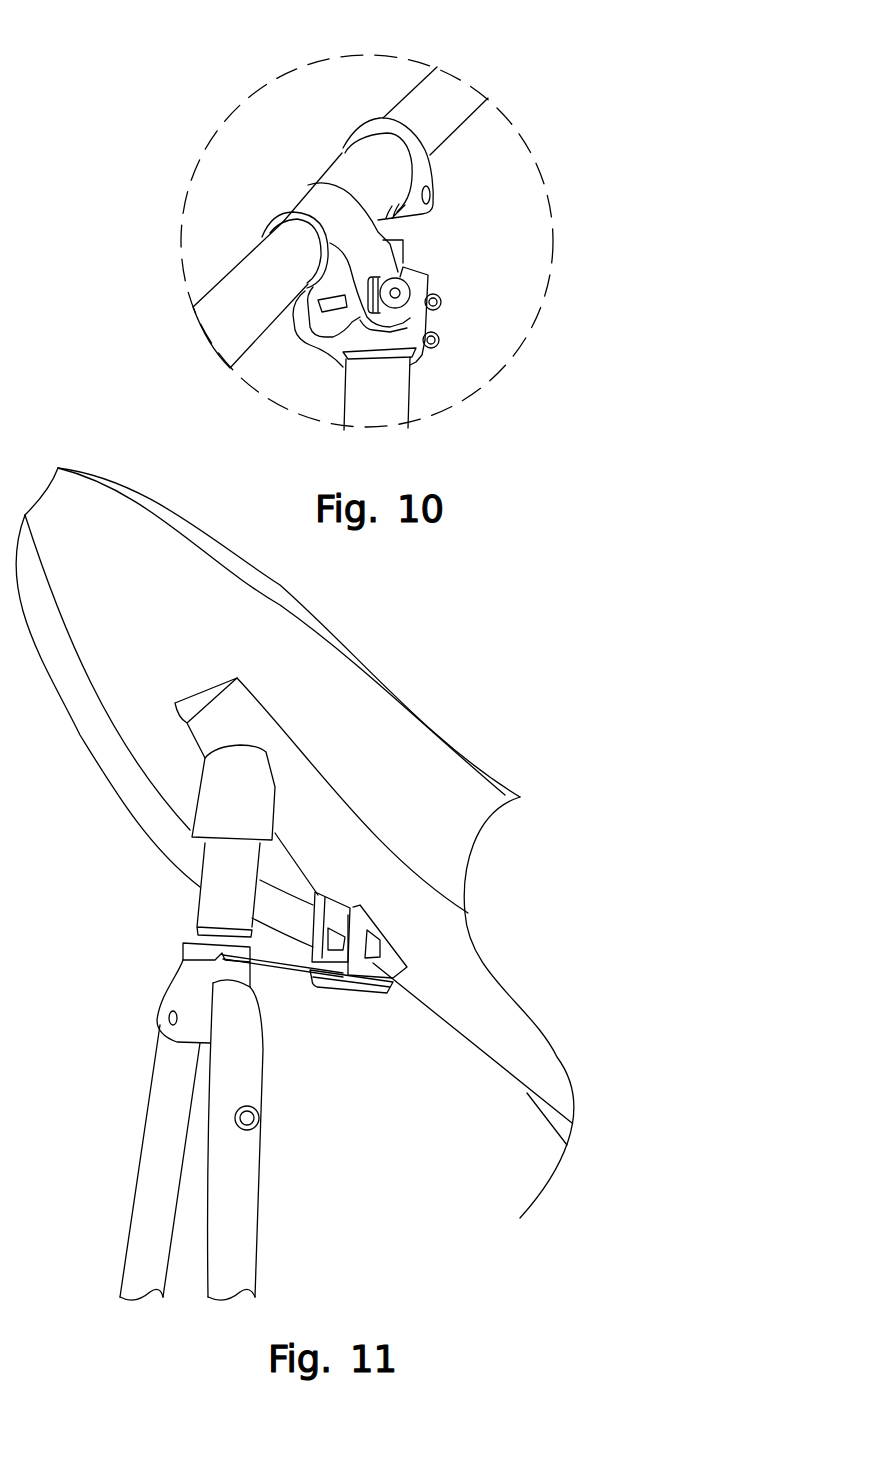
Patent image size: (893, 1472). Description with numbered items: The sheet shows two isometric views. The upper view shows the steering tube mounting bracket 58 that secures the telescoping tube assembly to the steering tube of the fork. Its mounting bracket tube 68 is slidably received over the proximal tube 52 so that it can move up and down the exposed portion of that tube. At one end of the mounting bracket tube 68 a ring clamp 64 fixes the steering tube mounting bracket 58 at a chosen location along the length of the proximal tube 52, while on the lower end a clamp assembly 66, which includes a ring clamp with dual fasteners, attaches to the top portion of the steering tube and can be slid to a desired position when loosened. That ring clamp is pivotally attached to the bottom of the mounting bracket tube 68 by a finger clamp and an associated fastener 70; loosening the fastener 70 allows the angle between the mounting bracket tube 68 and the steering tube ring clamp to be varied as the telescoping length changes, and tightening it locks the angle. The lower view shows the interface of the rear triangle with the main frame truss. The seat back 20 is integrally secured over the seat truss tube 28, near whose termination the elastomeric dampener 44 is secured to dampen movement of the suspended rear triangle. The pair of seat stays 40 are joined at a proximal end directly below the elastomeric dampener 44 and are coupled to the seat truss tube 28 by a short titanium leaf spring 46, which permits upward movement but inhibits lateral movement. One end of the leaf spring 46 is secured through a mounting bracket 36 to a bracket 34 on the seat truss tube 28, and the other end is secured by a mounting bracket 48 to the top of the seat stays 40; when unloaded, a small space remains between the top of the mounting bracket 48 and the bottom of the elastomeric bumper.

In FIG. 11, the seat back 20 is at (295, 831).
In FIG. 11, the seat truss tube 28 is at (368, 870).
In FIG. 11, the bracket 34 is at (393, 985).
In FIG. 11, the mounting bracket 36 is at (348, 985).
In FIG. 11, the seat stays 40 is at (163, 1120).
In FIG. 11, the elastomeric dampener 44 is at (223, 877).
In FIG. 11, the leaf spring 46 is at (277, 970).
In FIG. 11, the mounting bracket 48 is at (213, 957).
In FIG. 10, the proximal tube 52 is at (265, 275).
In FIG. 10, the steering tube mounting bracket 58 is at (309, 232).
In FIG. 10, the ring clamp 64 is at (390, 130).
In FIG. 10, the clamp assembly 66 is at (417, 310).
In FIG. 10, the mounting bracket tube 68 is at (350, 180).
In FIG. 10, the fastener 70 is at (400, 280).